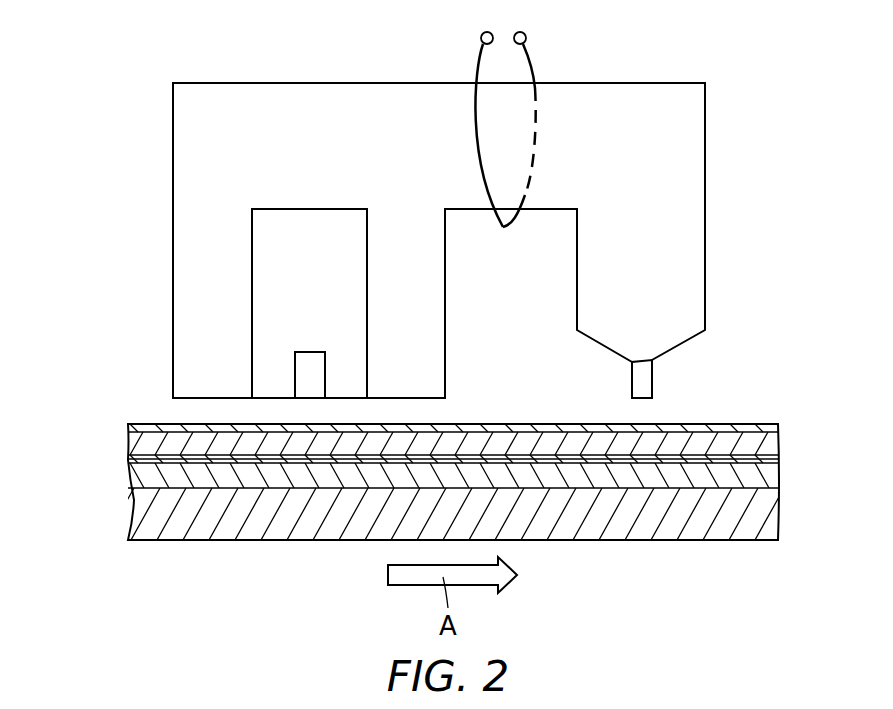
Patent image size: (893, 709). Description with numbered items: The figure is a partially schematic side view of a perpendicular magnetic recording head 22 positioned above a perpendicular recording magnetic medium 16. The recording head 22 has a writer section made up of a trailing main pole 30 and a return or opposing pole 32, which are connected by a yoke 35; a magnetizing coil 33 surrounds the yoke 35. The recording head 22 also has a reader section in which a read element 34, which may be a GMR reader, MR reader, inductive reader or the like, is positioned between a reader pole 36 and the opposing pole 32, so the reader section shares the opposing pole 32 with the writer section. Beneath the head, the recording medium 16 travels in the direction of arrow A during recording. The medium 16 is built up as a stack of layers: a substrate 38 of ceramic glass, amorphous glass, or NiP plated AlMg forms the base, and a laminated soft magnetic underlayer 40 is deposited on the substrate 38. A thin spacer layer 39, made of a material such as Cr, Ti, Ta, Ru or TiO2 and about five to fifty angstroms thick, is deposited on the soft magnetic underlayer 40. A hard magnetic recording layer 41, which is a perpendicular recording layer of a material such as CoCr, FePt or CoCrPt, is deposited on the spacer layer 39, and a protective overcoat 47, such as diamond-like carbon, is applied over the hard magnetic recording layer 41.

The perpendicular magnetic recording head 22 is at (128, 109).
The perpendicular recording magnetic medium 16 is at (427, 437).
The trailing main pole 30 is at (653, 380).
The return or opposing pole 32 is at (392, 349).
The magnetizing coil 33 is at (473, 110).
The read element 34 is at (310, 352).
The yoke 35 is at (463, 212).
The reader pole 36 is at (199, 349).
The substrate 38 is at (130, 520).
The spacer layer 39 is at (128, 459).
The soft magnetic underlayer 40 is at (130, 478).
The hard magnetic recording layer 41 is at (130, 445).
The protective overcoat 47 is at (128, 427).